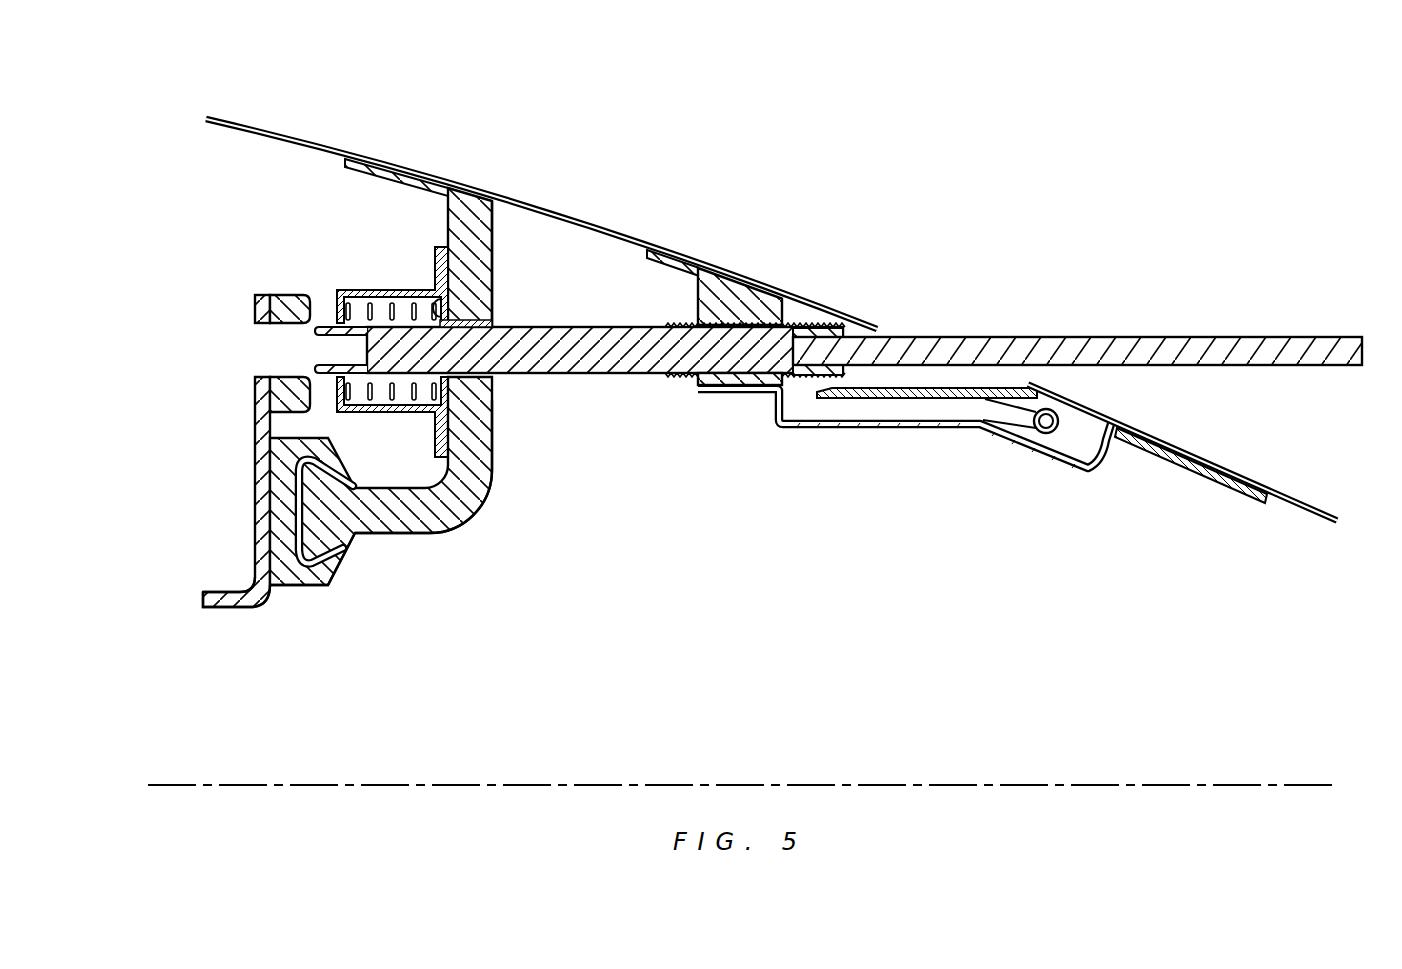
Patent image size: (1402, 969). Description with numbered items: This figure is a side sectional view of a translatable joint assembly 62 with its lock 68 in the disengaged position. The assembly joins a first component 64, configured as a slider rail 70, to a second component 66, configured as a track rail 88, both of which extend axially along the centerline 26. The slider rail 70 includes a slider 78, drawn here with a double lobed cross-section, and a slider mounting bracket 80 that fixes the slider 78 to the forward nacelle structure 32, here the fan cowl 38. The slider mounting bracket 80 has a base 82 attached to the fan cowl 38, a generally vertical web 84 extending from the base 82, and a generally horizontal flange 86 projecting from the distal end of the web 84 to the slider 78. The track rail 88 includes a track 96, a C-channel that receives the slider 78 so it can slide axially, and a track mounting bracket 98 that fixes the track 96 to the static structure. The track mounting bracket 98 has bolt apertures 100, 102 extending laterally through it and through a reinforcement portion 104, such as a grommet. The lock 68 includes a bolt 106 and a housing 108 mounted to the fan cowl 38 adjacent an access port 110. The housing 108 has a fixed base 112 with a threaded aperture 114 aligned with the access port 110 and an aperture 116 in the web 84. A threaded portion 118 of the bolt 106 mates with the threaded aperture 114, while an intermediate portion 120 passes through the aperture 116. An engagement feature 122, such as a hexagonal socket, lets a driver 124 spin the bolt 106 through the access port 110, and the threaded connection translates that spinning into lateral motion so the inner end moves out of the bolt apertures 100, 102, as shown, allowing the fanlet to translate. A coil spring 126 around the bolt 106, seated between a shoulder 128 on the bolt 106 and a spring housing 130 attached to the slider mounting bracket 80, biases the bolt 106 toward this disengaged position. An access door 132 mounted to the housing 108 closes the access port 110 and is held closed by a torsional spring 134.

The centerline 26 is at (1276, 782).
The forward nacelle structure 32 is at (541, 187).
The fan cowl 38 is at (270, 124).
The translatable joint assembly 62 is at (455, 540).
The component 64 is at (449, 495).
The slider rail 70 is at (449, 495).
The component 66 is at (255, 639).
The track rail 88 is at (268, 618).
The lock 68 is at (579, 395).
The slider 78 is at (335, 568).
The slider mounting bracket 80 is at (495, 477).
The base 82 is at (458, 190).
The web 84 is at (492, 249).
The flange 86 is at (400, 540).
The track 96 is at (305, 590).
The track mounting bracket 98 is at (255, 440).
The bolt aperture 100 is at (188, 355).
The bolt aperture 102 is at (265, 350).
The reinforcement portion 104 is at (277, 287).
The bolt 106 is at (725, 334).
The housing 108 is at (861, 440).
The access port 110 is at (1077, 311).
The fixed base 112 is at (750, 388).
The threaded aperture 114 is at (710, 388).
The aperture 116 is at (492, 323).
The threaded portion 118 is at (753, 348).
The intermediate portion 120 is at (507, 350).
The engagement feature 122 is at (840, 332).
The driver 124 is at (880, 332).
The coil spring 126 is at (359, 330).
The shoulder 128 is at (437, 307).
The spring housing 130 is at (360, 307).
The access door 132 is at (958, 406).
The torsional spring 134 is at (1043, 433).